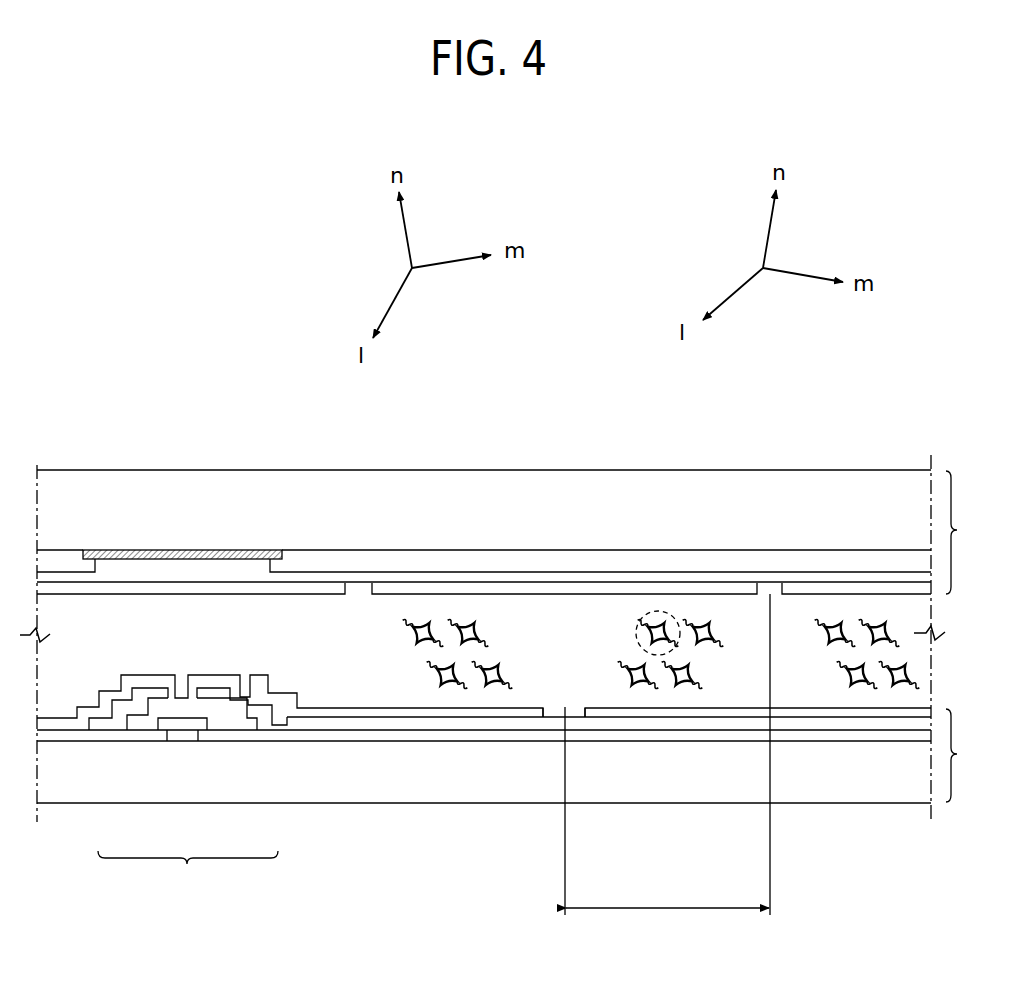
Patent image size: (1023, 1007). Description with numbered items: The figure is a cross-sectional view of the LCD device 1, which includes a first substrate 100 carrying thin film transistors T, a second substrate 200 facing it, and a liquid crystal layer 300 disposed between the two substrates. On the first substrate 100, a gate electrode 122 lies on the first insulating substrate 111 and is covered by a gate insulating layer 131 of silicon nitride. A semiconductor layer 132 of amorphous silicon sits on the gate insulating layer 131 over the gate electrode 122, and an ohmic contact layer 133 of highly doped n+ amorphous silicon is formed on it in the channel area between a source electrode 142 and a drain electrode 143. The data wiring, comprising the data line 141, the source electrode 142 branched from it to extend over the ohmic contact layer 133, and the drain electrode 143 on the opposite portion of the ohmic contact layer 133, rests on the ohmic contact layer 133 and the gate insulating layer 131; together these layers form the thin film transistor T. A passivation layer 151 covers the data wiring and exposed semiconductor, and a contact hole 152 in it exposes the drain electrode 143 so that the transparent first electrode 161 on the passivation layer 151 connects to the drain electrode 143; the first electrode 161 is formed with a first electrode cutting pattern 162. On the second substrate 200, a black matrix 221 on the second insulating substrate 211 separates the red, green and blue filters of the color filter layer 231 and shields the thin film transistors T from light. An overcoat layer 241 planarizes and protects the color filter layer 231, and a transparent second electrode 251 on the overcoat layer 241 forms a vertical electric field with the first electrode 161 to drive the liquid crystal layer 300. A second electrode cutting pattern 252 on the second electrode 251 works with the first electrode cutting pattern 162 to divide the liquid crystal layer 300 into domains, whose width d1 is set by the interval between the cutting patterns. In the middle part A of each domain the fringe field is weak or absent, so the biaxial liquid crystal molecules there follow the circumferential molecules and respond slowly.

The LCD device 1 is at (62, 406).
The first substrate 100 is at (972, 755).
The first insulating substrate 111 is at (468, 780).
The gate electrode 122 is at (185, 736).
The gate insulating layer 131 is at (328, 735).
The semiconductor layer 132 is at (148, 727).
The ohmic contact layer 133 is at (245, 727).
The data line 141 is at (93, 724).
The source electrode 142 is at (122, 708).
The drain electrode 143 is at (265, 722).
The passivation layer 151 is at (375, 720).
The contact hole 152 is at (285, 679).
The first electrode 161 is at (522, 713).
The first electrode cutting pattern 162 is at (573, 713).
The second substrate 200 is at (974, 532).
The second insulating substrate 211 is at (592, 497).
The black matrix 221 is at (247, 555).
The color filter layer 231 is at (375, 557).
The overcoat layer 241 is at (125, 577).
The second electrode 251 is at (500, 588).
The second electrode cutting pattern 252 is at (777, 588).
The liquid crystal layer 300 is at (915, 678).
The middle part of the domain A is at (657, 611).
The thin film transistor T is at (188, 873).
The width of a domain d1 is at (667, 754).